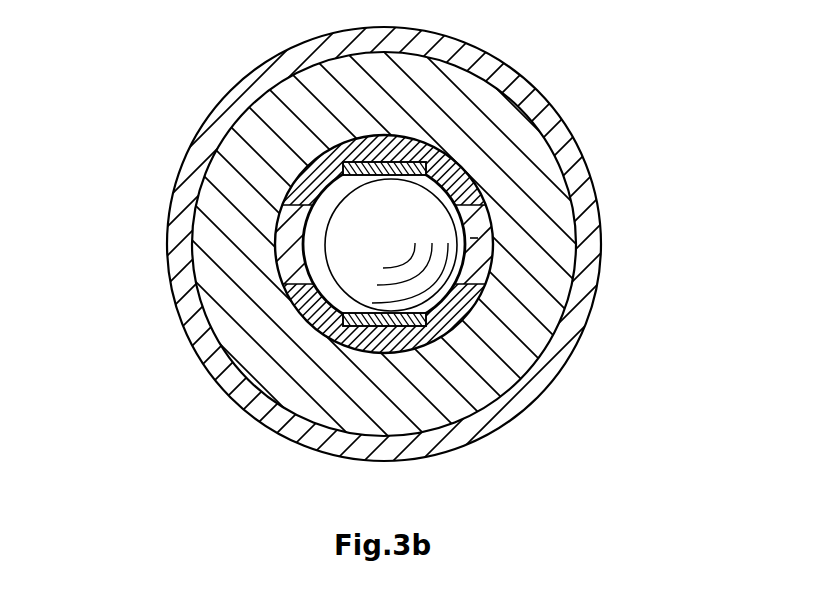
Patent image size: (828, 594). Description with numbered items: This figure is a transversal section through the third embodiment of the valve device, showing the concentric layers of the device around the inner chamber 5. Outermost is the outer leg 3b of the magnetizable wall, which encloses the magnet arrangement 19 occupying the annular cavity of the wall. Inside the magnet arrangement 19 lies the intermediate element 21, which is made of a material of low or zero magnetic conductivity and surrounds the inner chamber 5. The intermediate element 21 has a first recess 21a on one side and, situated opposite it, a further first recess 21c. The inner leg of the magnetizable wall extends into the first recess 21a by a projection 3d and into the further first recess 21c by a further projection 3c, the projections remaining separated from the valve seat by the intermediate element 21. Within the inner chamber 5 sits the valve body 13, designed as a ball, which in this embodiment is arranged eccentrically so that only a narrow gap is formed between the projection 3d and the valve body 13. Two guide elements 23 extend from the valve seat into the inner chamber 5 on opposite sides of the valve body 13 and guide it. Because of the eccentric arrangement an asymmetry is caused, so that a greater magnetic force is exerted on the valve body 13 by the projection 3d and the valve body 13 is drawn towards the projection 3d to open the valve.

The outer leg 3b is at (178, 226).
The further projection 3c is at (204, 303).
The projection 3d is at (478, 238).
The inner chamber 5 is at (321, 290).
The valve body 13 is at (363, 278).
The magnet arrangement 19 is at (255, 178).
The intermediate element 21 is at (452, 306).
The first recess 21a is at (498, 268).
The further first recess 21c is at (262, 243).
The guide elements 23 is at (390, 162).